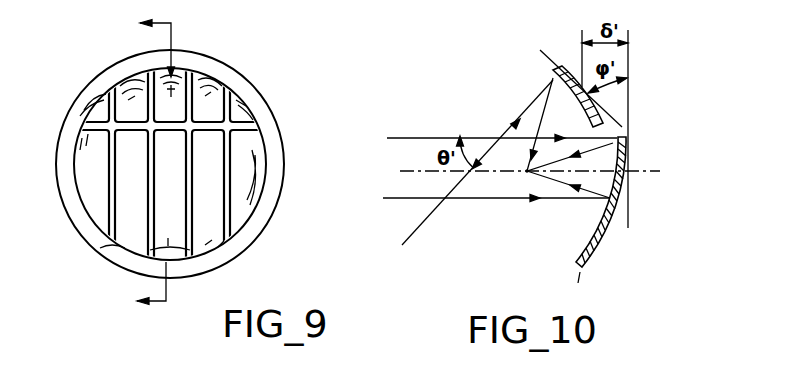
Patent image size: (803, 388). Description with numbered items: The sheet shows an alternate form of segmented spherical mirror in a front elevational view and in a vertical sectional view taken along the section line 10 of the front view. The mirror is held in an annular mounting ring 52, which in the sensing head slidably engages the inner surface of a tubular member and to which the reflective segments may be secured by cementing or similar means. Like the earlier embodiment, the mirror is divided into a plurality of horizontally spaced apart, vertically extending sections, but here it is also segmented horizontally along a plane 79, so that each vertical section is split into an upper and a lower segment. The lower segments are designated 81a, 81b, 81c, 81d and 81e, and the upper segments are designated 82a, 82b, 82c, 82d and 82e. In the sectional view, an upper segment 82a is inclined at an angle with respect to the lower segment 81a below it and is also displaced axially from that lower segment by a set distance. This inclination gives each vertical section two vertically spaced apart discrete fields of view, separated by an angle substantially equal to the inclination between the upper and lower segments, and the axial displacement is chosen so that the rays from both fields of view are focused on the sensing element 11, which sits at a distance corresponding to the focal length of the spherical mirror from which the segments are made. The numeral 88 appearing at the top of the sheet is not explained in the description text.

In FIG. 9, the section line 10 is at (140, 163).
In FIG. 10, the sensing element 11 is at (525, 172).
In FIG. 9, the annular mounting ring 52 is at (220, 65).
In FIG. 9, the horizontal segmenting plane 79 is at (253, 127).
In FIG. 9, the lower mirror segment 81a is at (173, 263).
In FIG. 10, the lower mirror segment 81a is at (587, 220).
In FIG. 9, the lower mirror segment 81b is at (95, 261).
In FIG. 9, the lower mirror segment 81c is at (208, 240).
In FIG. 9, the lower mirror segment 81d is at (95, 207).
In FIG. 9, the lower mirror segment 81e is at (267, 200).
In FIG. 9, the upper mirror segment 82a is at (175, 72).
In FIG. 10, the upper mirror segment 82a is at (553, 71).
In FIG. 9, the upper mirror segment 82b is at (135, 78).
In FIG. 9, the upper mirror segment 82c is at (220, 87).
In FIG. 9, the upper mirror segment 82d is at (95, 113).
In FIG. 9, the upper mirror segment 82e is at (243, 113).
In FIG. 9, the element 88' 88 is at (299, 10).